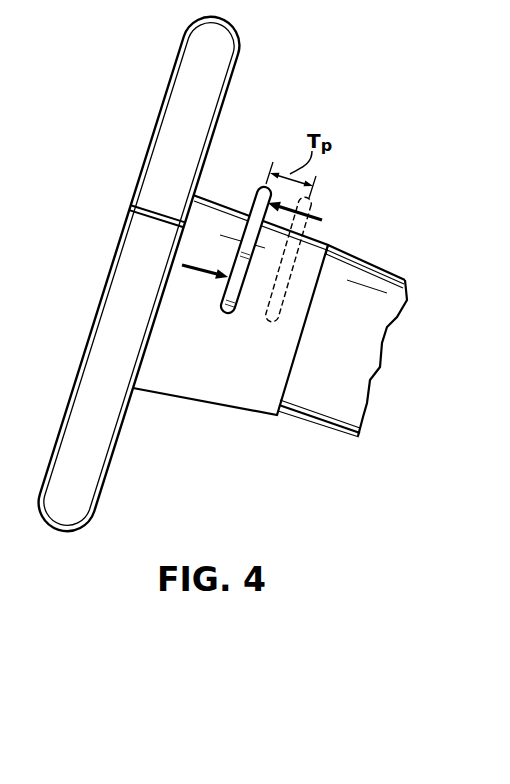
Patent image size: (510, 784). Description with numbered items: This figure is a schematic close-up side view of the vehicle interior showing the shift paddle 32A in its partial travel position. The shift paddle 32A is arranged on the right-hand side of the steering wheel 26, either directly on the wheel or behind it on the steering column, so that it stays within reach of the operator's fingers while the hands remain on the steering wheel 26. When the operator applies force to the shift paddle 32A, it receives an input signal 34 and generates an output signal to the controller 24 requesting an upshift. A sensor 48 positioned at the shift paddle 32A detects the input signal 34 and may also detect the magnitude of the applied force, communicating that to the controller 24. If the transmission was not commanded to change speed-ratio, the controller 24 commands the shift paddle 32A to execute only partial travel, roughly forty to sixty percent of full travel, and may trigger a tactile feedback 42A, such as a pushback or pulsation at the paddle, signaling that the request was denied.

The controller 24 is at (227, 407).
The steering wheel 26 is at (82, 307).
The shift paddle 32A is at (335, 228).
The input signal 34 is at (316, 217).
The tactile feedback 42A is at (197, 272).
The sensor 48 is at (265, 203).